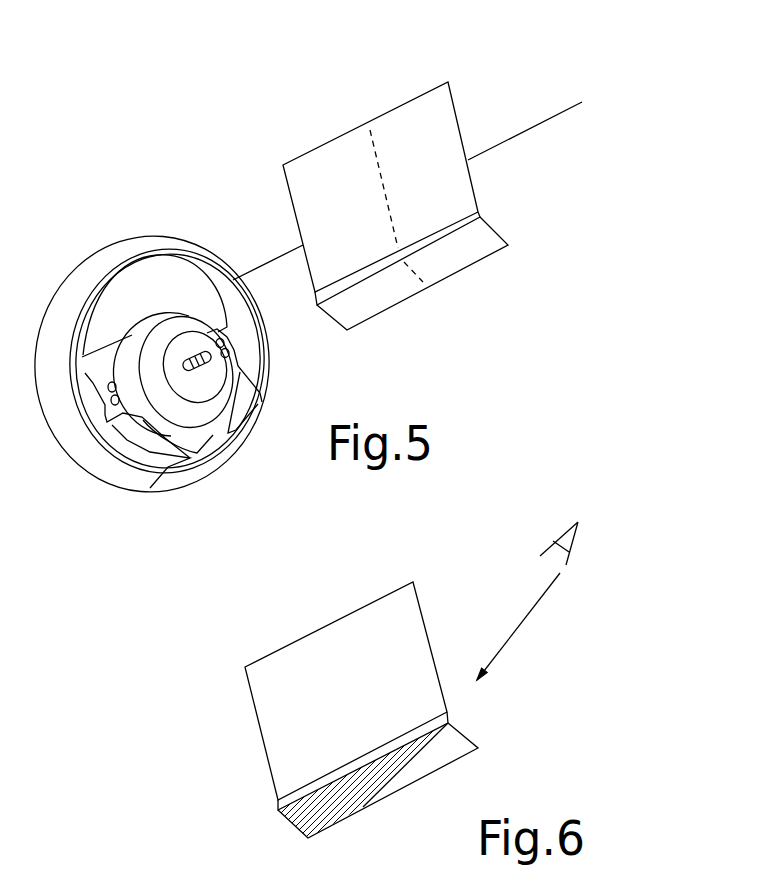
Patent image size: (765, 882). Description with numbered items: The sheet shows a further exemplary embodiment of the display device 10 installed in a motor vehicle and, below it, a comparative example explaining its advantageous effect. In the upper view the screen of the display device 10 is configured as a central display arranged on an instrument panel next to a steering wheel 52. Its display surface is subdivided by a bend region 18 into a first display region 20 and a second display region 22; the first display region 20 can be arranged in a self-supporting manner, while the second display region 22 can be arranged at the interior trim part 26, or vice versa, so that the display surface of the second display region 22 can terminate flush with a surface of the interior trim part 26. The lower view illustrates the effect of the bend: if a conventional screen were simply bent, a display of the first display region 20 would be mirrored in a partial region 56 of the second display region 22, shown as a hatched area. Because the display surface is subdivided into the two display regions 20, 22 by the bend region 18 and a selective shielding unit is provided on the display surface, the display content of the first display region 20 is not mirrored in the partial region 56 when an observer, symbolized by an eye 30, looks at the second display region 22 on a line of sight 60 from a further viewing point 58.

In FIG. 5, the display device 10 is at (432, 191).
In FIG. 5, the bend region 18 is at (482, 212).
In FIG. 6, the bend region 18 is at (452, 720).
In FIG. 5, the first display region 20 is at (338, 227).
In FIG. 6, the first display region 20 is at (331, 712).
In FIG. 5, the second display region 22 is at (359, 301).
In FIG. 6, the second display region 22 is at (438, 758).
In FIG. 5, the interior trim part 26 is at (268, 260).
In FIG. 6, the eye 30 is at (572, 548).
In FIG. 5, the steering wheel 52 is at (120, 248).
In FIG. 6, the partial region 56 is at (361, 775).
In FIG. 6, the further viewing point 58 is at (578, 522).
In FIG. 6, the line of sight 60 is at (532, 615).